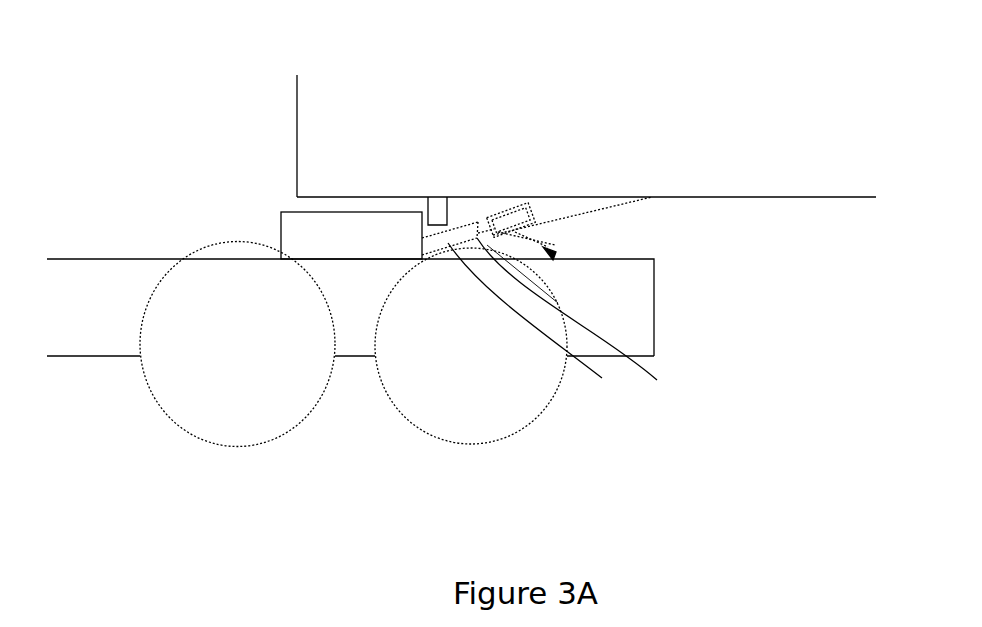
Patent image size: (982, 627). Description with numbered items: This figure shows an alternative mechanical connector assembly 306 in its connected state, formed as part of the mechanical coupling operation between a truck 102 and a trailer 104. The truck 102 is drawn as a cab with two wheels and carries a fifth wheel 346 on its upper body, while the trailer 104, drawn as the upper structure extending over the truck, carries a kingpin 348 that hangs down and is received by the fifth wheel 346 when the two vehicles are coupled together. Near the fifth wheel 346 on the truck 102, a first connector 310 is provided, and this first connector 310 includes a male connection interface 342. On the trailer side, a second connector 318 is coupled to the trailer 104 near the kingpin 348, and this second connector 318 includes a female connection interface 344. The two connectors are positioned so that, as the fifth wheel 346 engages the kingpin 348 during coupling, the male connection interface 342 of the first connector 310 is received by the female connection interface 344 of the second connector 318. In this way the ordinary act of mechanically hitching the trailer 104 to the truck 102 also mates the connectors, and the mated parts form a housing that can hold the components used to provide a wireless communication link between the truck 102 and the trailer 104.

The truck 102 is at (94, 322).
The trailer 104 is at (451, 160).
The mechanical connector assembly 306 is at (556, 256).
The first connector 310 is at (532, 324).
The second connector 318 is at (593, 213).
The male connection interface 342 is at (573, 321).
The female connection interface 344 is at (578, 243).
The fifth wheel 346 is at (302, 221).
The kingpin 348 is at (435, 197).